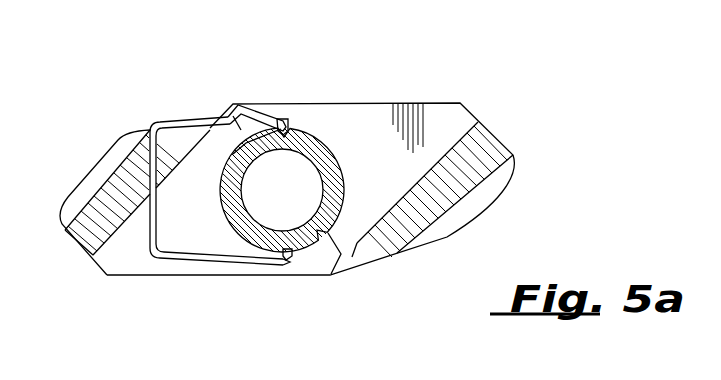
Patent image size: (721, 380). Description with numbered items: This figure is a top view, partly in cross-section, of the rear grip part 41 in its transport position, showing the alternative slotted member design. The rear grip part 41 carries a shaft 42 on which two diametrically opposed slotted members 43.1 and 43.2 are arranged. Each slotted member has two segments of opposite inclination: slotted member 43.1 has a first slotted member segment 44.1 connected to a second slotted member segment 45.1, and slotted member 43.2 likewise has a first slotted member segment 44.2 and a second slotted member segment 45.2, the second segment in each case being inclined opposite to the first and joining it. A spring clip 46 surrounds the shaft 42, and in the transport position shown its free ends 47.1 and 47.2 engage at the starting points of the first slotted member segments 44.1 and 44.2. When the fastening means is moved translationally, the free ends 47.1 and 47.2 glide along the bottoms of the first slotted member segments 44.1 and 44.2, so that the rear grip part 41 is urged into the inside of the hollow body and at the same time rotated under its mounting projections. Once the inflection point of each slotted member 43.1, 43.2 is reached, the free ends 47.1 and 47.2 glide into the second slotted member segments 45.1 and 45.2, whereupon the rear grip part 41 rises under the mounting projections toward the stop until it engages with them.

The rear grip part 41 is at (474, 110).
The shaft 42 is at (340, 152).
The slotted member 43.1 is at (329, 262).
The slotted member 43.2 is at (234, 114).
The first slotted member segment 44.1 is at (280, 253).
The first slotted member segment 44.2 is at (288, 112).
The second slotted member segment 45.1 is at (357, 255).
The second slotted member segment 45.2 is at (236, 126).
The spring clip 46 is at (150, 245).
The free end of the spring clip 47.1 is at (290, 254).
The free end of the spring clip 47.2 is at (277, 118).